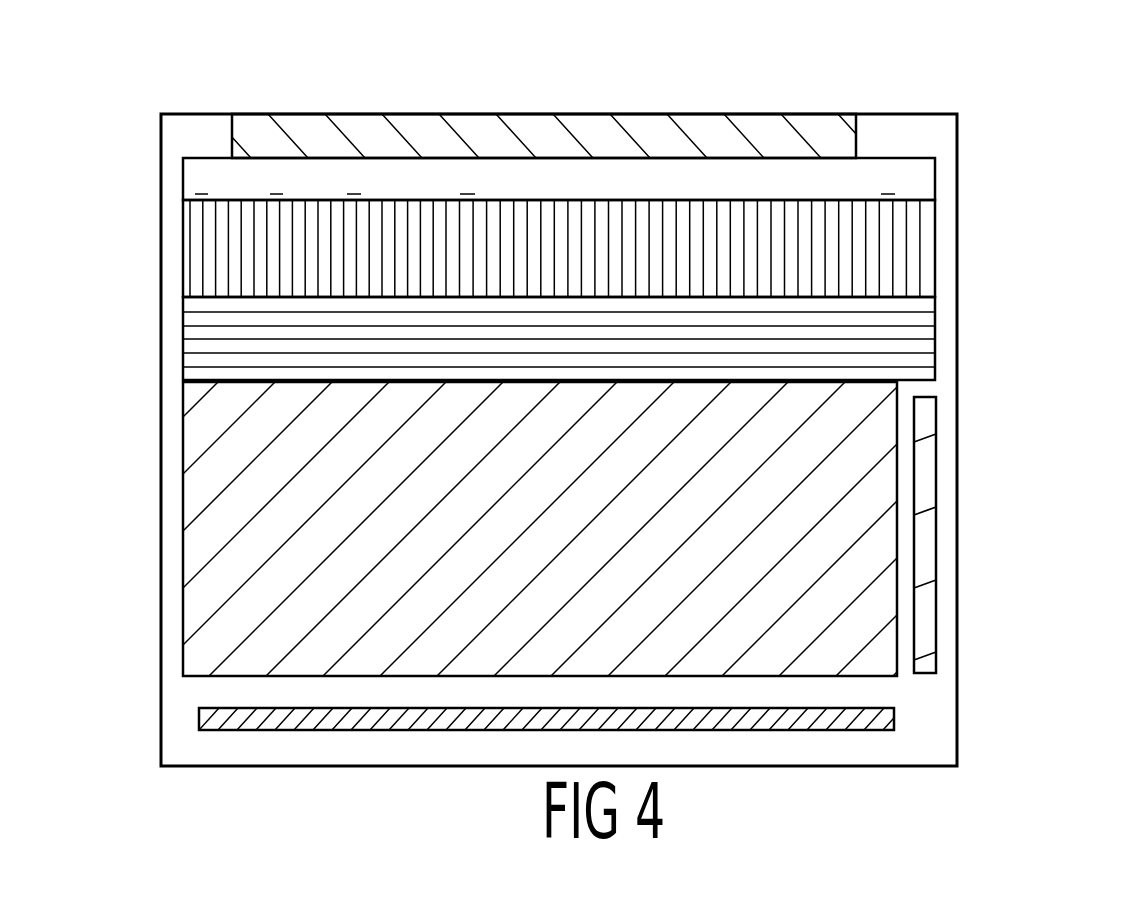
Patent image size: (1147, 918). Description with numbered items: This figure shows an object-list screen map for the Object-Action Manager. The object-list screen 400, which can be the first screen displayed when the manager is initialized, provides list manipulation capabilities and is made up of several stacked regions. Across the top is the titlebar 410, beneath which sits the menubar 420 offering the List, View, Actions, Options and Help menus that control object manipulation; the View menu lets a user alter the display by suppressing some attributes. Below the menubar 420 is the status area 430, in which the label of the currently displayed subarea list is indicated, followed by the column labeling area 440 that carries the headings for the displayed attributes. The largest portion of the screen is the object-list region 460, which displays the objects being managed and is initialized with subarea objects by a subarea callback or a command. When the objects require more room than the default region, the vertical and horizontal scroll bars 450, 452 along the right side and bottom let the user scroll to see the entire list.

The object-list screen 400 is at (1135, 112).
The titlebar 410 is at (252, 127).
The menubar 420 is at (183, 172).
The status area 430 is at (210, 250).
The column labeling area 440 is at (935, 355).
The scroll bar 450 is at (935, 447).
The scroll bar 452 is at (867, 730).
The object-list region 460 is at (205, 578).